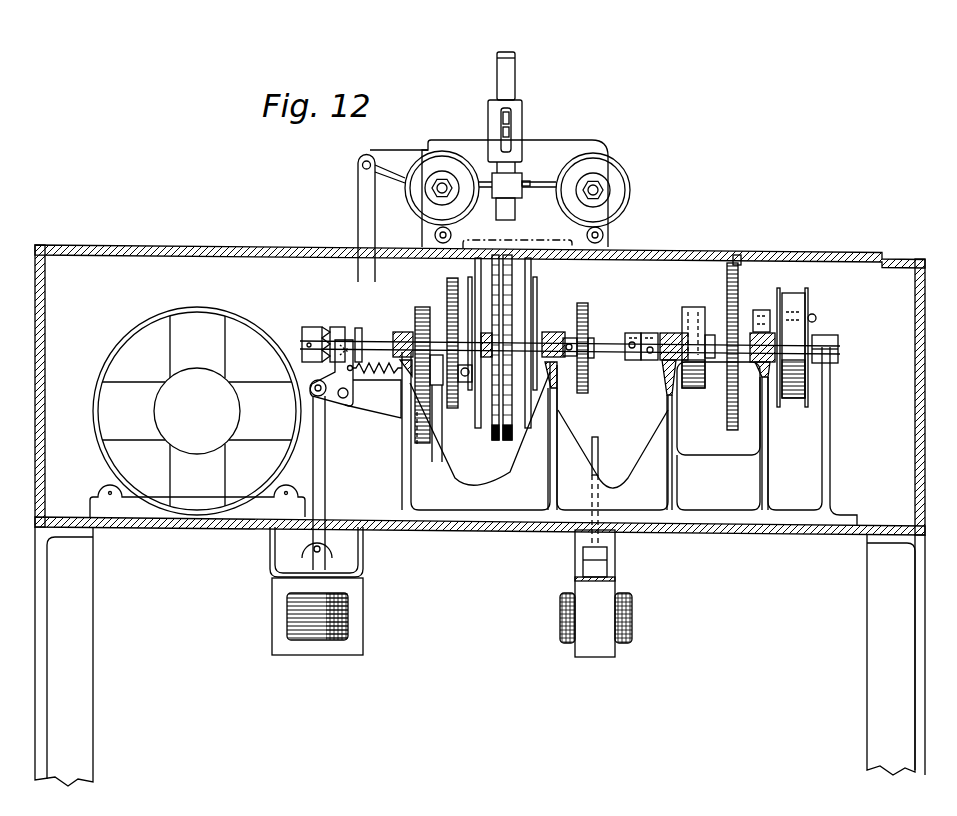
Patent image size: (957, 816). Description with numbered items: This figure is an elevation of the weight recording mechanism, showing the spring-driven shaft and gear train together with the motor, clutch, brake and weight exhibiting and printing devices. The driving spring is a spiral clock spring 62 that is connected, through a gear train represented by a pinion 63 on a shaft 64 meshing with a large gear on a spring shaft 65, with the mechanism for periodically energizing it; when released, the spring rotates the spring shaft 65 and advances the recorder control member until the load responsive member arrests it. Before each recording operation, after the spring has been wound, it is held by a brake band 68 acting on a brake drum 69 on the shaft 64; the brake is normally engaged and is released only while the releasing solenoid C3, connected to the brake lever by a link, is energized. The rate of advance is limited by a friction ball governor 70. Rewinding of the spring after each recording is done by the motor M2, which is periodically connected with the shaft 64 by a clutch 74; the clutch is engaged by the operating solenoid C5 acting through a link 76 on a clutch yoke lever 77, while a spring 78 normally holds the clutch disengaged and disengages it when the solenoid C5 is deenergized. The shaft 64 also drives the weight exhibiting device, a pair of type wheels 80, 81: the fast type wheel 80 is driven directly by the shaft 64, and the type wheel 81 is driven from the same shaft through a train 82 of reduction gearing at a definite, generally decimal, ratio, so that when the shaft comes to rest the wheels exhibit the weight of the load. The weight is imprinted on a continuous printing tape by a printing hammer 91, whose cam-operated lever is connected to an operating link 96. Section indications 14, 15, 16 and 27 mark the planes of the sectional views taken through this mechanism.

The motor M2 is at (137, 333).
The operating solenoid C5 is at (287, 625).
The releasing solenoid C3 is at (560, 619).
The clutch 74 is at (312, 327).
The link 76 is at (326, 447).
The clutch yoke lever 77 is at (352, 388).
The spring 78 is at (381, 362).
The type wheel 80 is at (512, 442).
The type wheel 81 is at (494, 440).
The train of reduction gearing 82 is at (456, 408).
The printing hammer 91 is at (518, 221).
The operating link 96 is at (358, 207).
The spiral clock spring 62 is at (793, 293).
The pinion 63 is at (725, 355).
The shaft 64 is at (610, 352).
The spring shaft 65 is at (743, 254).
The brake band 68 is at (583, 302).
The brake drum 69 is at (590, 372).
The friction ball governor 70 is at (695, 310).
The section line 14 is at (430, 268).
The section line 15 is at (855, 258).
The section line 16 is at (640, 258).
The section line 27 is at (680, 300).